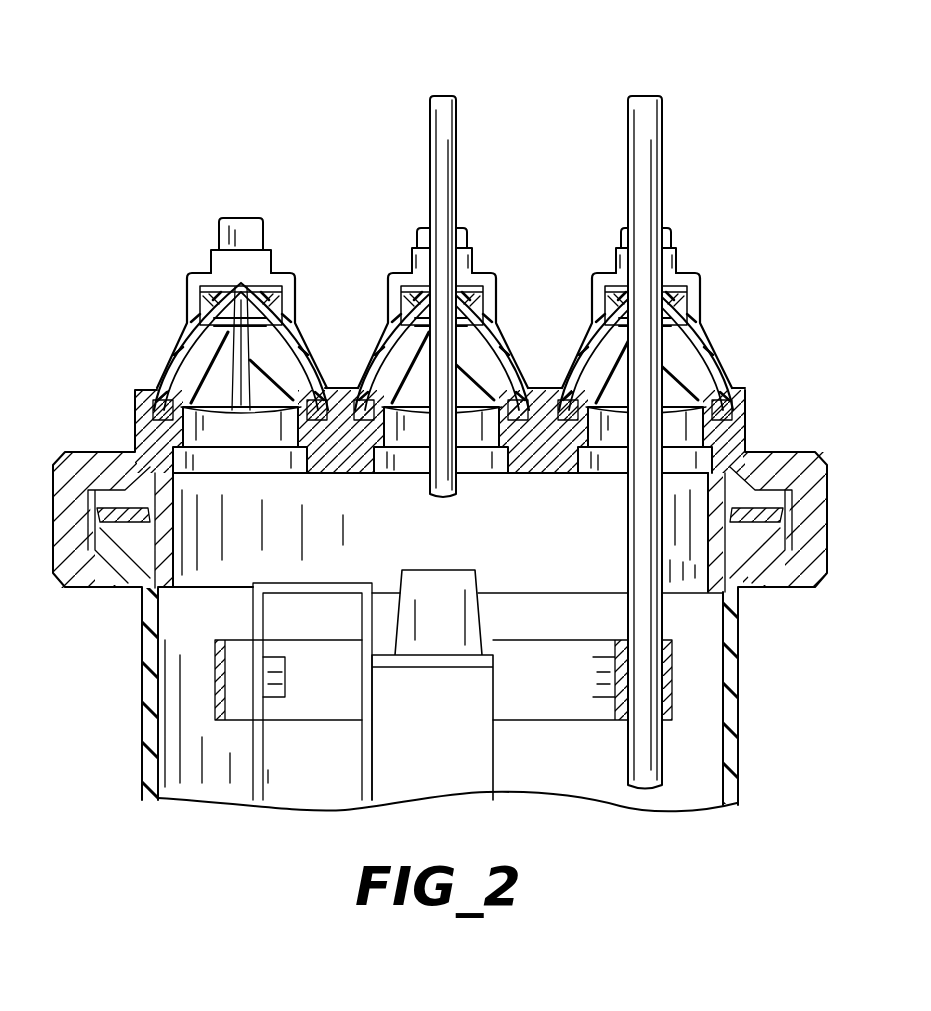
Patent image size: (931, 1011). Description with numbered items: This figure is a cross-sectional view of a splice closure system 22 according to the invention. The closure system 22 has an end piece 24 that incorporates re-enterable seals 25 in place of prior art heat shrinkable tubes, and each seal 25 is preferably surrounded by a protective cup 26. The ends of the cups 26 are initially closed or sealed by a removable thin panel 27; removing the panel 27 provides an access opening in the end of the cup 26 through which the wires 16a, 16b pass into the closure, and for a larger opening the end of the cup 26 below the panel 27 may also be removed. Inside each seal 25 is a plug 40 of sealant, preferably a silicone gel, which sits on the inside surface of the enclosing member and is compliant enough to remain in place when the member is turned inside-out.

The wire 16a is at (445, 126).
The wire 16b is at (642, 118).
The splice closure system 22 is at (778, 627).
The end piece 24 is at (243, 520).
The re-enterable seal 25 is at (190, 273).
The protective cup 26 is at (407, 277).
The removable thin panel 27 is at (242, 218).
The plug of sealant 40 is at (207, 383).